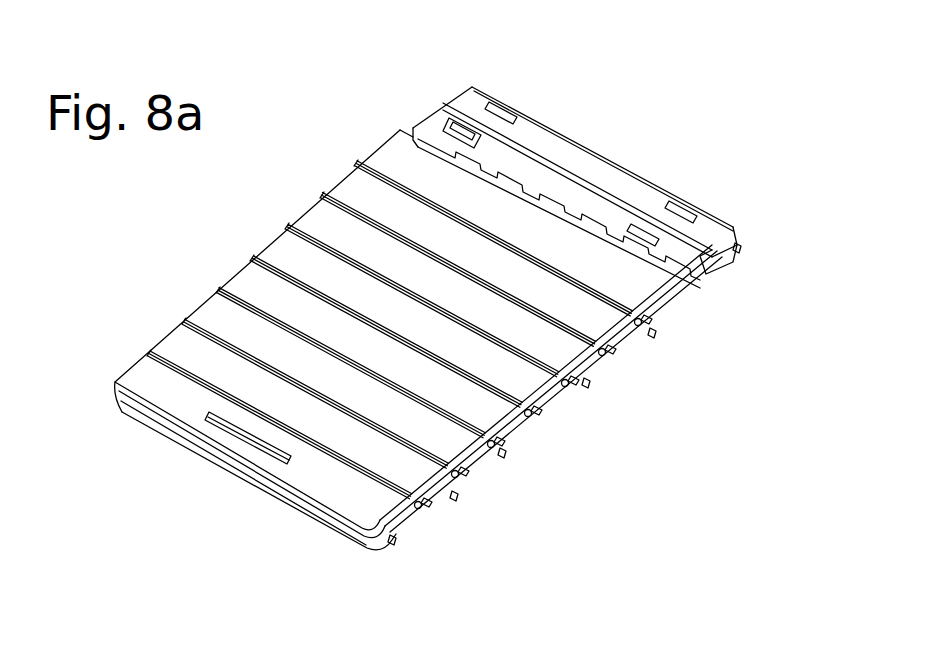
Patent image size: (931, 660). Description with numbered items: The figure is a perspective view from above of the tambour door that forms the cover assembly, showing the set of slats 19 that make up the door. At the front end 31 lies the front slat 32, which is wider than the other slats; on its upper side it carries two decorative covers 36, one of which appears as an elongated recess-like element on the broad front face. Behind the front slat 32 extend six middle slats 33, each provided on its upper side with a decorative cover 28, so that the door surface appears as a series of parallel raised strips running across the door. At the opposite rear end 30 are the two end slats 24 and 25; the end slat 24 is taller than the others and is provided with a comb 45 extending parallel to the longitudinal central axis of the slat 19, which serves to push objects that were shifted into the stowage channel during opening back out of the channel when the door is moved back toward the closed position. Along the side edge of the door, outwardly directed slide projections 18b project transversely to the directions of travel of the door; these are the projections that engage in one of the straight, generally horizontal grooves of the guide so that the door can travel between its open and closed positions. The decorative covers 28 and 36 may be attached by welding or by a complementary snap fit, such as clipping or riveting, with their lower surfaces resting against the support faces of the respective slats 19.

The slide projection 18b is at (739, 252).
The slat 19 is at (617, 350).
The end slat 24 is at (540, 177).
The end slat 25 is at (605, 168).
The decorative cover 28 is at (392, 152).
The rear end 30 is at (717, 200).
The front end 31 is at (213, 477).
The front slat 32 is at (333, 520).
The middle slat 33 is at (533, 430).
The decorative cover 36 is at (320, 473).
The comb 45 is at (470, 143).